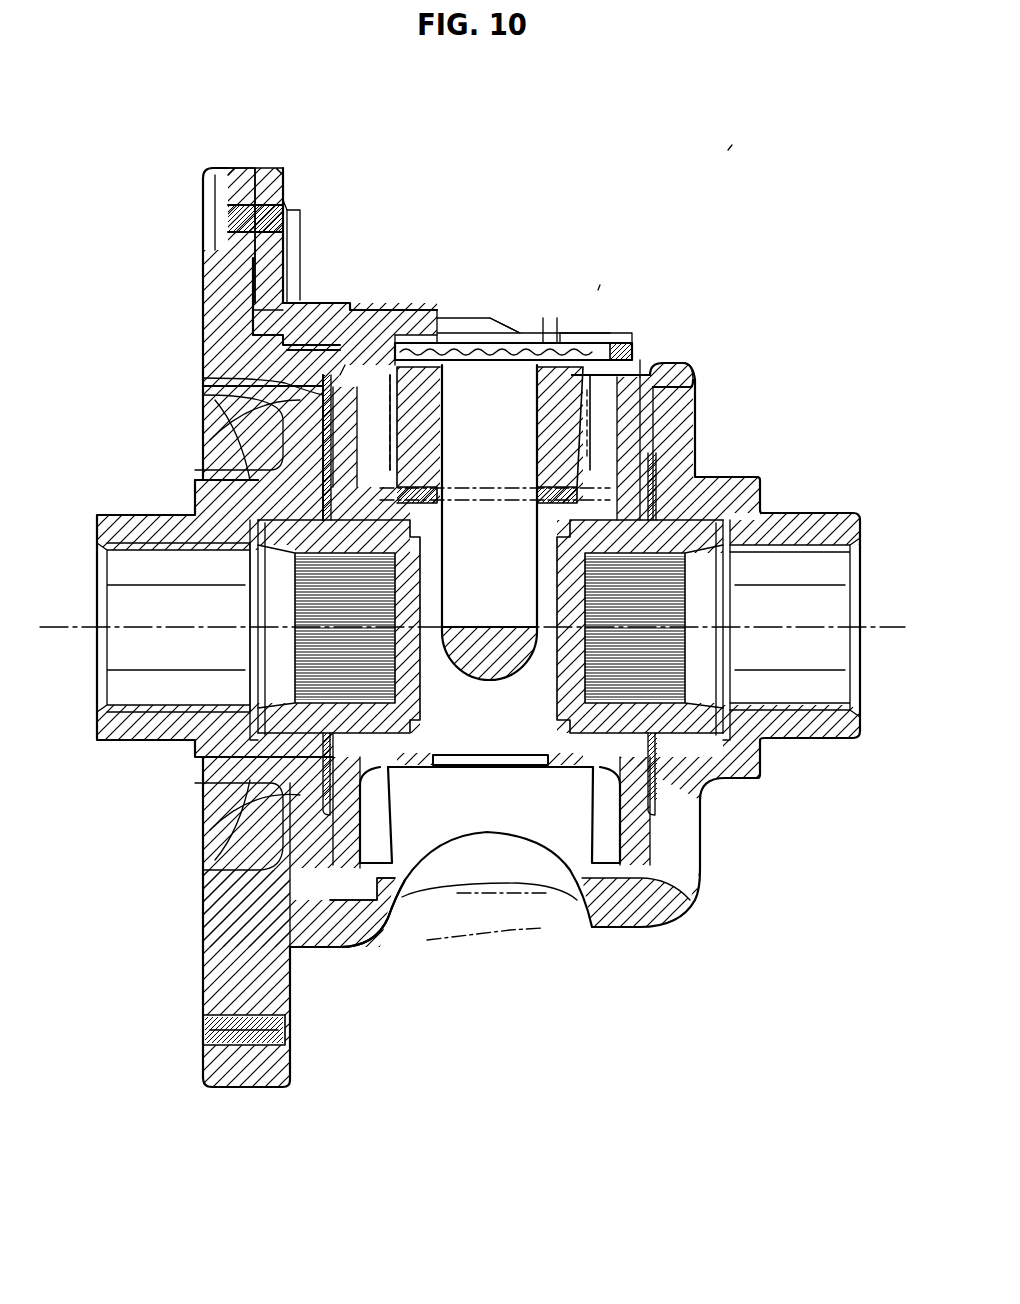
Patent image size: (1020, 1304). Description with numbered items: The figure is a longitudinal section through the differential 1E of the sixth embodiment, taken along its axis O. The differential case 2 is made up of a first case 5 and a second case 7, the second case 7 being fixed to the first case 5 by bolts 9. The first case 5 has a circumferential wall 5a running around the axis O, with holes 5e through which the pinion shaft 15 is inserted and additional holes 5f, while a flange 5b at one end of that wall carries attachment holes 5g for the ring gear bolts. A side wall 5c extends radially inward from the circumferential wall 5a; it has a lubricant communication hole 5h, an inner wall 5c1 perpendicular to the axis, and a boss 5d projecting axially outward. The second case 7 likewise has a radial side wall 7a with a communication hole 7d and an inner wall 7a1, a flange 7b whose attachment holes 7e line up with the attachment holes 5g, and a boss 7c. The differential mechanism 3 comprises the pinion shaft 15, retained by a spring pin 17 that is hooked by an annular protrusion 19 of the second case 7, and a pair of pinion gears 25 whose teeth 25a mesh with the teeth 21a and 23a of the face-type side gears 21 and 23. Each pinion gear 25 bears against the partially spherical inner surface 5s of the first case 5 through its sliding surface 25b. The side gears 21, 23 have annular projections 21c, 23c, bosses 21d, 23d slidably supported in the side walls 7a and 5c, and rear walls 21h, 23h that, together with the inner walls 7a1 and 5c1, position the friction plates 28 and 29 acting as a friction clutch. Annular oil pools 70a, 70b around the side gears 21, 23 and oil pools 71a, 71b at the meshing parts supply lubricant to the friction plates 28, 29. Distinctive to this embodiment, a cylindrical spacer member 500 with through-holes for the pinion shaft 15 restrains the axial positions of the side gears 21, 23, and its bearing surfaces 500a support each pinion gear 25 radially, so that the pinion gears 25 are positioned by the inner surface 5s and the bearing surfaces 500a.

The differential 1E is at (732, 145).
The differential case 2 is at (235, 150).
The differential mechanism 3 is at (600, 285).
The first case 5 is at (642, 245).
The circumferential wall 5a is at (397, 380).
The flange 5b is at (268, 168).
The side wall 5c is at (690, 375).
The inner wall 5c1 is at (640, 362).
The boss 5d is at (845, 513).
The holes 5e is at (522, 333).
The additional holes 5f is at (387, 913).
The attachment holes 5g is at (287, 212).
The lubricant communication hole 5h is at (700, 392).
The inner surface 5s is at (553, 343).
The second case 7 is at (185, 318).
The side wall 7a is at (203, 360).
The inner wall 7a1 is at (330, 365).
The flange 7b is at (225, 172).
The boss 7c is at (100, 515).
The communication hole 7d is at (230, 388).
The attachment holes 7e is at (235, 215).
The bolts 9 is at (285, 1040).
The pinion shaft 15 is at (473, 599).
The spring pin 17 is at (548, 320).
The annular protrusion 19 is at (295, 300).
The side gear 21 is at (360, 350).
The teeth 21a is at (395, 345).
The annular projection 21c is at (200, 478).
The boss 21d is at (200, 500).
The rear wall 21h is at (347, 373).
The side gear 23 is at (665, 365).
The teeth 23a is at (600, 350).
The annular projection 23c is at (765, 490).
The boss 23d is at (765, 510).
The rear wall 23h is at (700, 420).
The pinion gears 25 is at (445, 340).
The teeth 25a is at (405, 345).
The sliding surface 25b is at (420, 345).
The friction plate 28 is at (215, 435).
The friction plate 29 is at (720, 450).
The annular oil pool 70a is at (385, 343).
The annular oil pool 70b is at (620, 362).
The oil pool 71a is at (335, 430).
The oil pool 71b is at (600, 440).
The spacer member 500 is at (560, 770).
The bearing surfaces 500a is at (300, 480).
The axis O is at (70, 630).